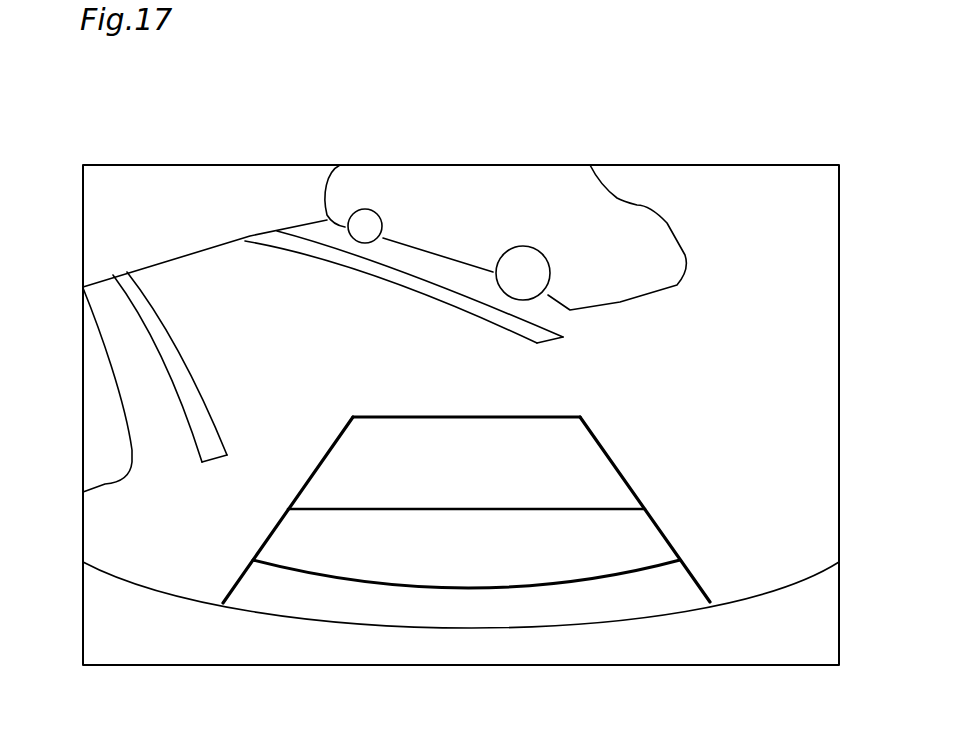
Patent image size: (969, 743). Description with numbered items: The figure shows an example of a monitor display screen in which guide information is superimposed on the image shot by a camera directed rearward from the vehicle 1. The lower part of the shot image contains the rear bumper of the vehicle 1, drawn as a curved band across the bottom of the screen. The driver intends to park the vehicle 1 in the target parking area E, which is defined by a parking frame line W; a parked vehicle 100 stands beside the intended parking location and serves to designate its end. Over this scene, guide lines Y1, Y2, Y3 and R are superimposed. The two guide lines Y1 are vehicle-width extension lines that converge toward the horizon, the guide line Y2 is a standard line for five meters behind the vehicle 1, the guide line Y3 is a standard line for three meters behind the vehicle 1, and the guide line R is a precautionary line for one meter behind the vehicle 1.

The vehicle 1 is at (590, 651).
The target parking area E is at (217, 268).
The parked vehicle 100 is at (655, 238).
The parking frame line W is at (440, 283).
The guide lines Y1 is at (322, 452).
The guide line Y2 is at (407, 417).
The guide line Y3 is at (428, 509).
The guide line R is at (473, 585).